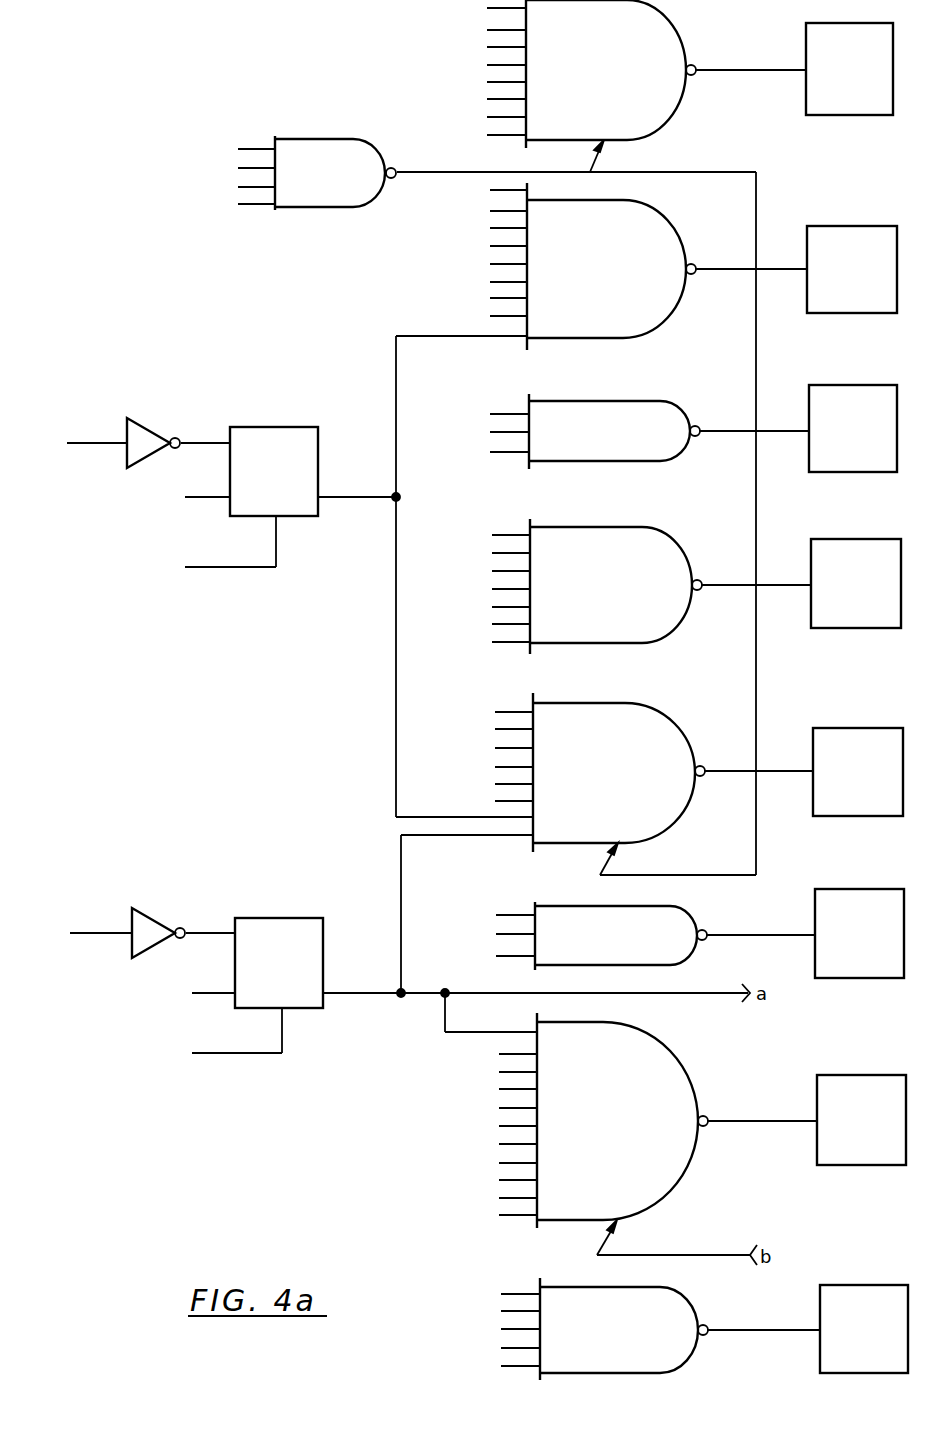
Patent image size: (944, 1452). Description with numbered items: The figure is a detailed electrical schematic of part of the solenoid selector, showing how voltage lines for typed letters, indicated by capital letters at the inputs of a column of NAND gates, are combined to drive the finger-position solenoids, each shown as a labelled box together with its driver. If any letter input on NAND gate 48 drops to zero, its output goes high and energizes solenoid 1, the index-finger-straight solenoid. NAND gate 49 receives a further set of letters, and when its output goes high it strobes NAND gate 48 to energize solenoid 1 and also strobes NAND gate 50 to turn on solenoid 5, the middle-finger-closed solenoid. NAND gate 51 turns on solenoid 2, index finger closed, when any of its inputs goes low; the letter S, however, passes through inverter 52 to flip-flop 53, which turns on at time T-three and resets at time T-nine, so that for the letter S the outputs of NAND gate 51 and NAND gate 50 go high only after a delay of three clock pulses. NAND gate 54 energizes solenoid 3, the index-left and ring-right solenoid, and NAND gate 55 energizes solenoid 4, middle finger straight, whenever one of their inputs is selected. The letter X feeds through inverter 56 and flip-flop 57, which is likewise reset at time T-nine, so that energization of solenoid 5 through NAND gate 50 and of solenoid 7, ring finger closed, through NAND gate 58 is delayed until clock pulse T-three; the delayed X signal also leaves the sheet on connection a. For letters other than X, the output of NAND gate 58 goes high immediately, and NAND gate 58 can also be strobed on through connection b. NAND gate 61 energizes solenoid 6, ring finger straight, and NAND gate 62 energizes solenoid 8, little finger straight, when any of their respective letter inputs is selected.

The solenoid 1 is at (841, 71).
The solenoid 2 is at (844, 272).
The solenoid 3 is at (845, 431).
The solenoid 4 is at (848, 587).
The solenoid 5 is at (850, 775).
The solenoid 6 is at (851, 936).
The solenoid 7 is at (853, 1123).
The solenoid 8 is at (856, 1332).
The NAND gate 48 is at (579, 82).
The NAND gate 49 is at (306, 185).
The NAND gate 50 is at (587, 783).
The NAND gate 51 is at (579, 281).
The inverter 52 is at (149, 430).
The flip-flop 53 is at (260, 483).
The NAND gate 54 is at (580, 442).
The NAND gate 55 is at (584, 597).
The inverter 56 is at (154, 921).
The flip-flop 57 is at (265, 975).
The NAND gate 58 is at (592, 1124).
The NAND gate 61 is at (587, 947).
The NAND gate 62 is at (600, 1341).